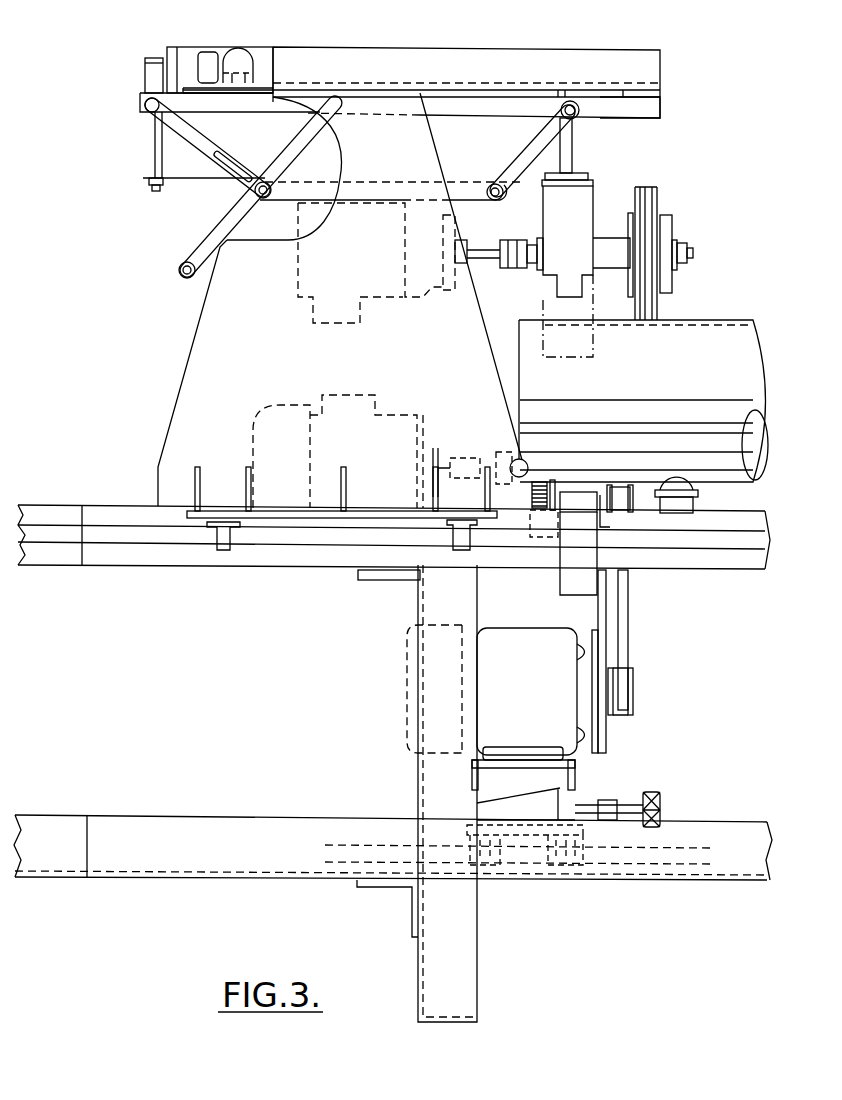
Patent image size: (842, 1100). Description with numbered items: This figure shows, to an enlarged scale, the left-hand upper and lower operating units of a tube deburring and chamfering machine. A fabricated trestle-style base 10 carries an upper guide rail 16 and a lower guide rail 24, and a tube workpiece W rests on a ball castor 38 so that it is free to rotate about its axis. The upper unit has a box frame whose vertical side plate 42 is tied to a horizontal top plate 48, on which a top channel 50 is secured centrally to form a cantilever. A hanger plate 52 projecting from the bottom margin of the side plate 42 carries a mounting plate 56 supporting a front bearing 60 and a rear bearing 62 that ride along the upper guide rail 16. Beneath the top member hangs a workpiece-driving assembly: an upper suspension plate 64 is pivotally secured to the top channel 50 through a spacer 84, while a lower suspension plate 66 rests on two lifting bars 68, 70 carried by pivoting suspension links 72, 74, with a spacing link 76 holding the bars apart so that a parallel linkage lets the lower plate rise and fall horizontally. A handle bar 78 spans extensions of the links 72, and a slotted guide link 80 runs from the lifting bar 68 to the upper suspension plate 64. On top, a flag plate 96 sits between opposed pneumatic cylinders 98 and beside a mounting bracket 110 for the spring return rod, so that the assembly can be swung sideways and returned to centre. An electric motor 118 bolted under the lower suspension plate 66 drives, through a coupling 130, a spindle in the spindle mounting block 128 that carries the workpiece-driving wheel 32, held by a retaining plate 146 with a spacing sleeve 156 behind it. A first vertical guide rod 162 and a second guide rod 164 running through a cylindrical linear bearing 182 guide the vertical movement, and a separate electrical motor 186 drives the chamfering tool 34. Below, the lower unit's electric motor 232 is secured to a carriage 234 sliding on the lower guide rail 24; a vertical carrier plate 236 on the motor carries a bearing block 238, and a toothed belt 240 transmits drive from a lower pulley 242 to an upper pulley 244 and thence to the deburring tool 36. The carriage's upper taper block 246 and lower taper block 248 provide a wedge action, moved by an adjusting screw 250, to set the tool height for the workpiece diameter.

The trestle-style base 10 is at (460, 980).
The upper guide rail 16 is at (110, 537).
The lower guide rail 24 is at (660, 857).
The workpiece-driving wheel 32 is at (643, 187).
The chamfering tool 34 is at (513, 452).
The deburring tool 36 is at (540, 490).
The ball castor 38 is at (673, 482).
The side plate 42 is at (196, 402).
The top plate 48 is at (263, 88).
The top channel 50 is at (480, 67).
The hanger plate 52 is at (340, 480).
The mounting plate 56 is at (383, 519).
The front bearing 60 is at (210, 541).
The rear bearing 62 is at (475, 541).
The upper suspension plate 64 is at (617, 110).
The lower suspension plate 66 is at (187, 180).
The lifting bar 68 is at (263, 198).
The lifting bar 70 is at (490, 188).
The suspension link 72 is at (300, 147).
The suspension link 74 is at (547, 141).
The spacing link 76 is at (382, 187).
The handle bar 78 is at (185, 280).
The slotted guide link 80 is at (177, 127).
The spacer 84 is at (653, 93).
The flag plate 96 is at (180, 63).
The pneumatic cylinder 98 is at (232, 52).
The mounting bracket 110 is at (205, 62).
The electric motor 118 is at (378, 280).
The spindle mounting block 128 is at (552, 222).
The coupling 130 is at (523, 262).
The retaining plate 146 is at (673, 230).
The spacing sleeve 156 is at (607, 243).
The first vertical guide rod 162 is at (573, 158).
The second guide rod 164 is at (155, 160).
The cylindrical linear bearing 182 is at (158, 78).
The electrical motor 186 is at (393, 425).
The electric motor 232 is at (548, 694).
The carriage 234 is at (573, 770).
The vertical carrier plate 236 is at (602, 740).
The bearing block 238 is at (575, 500).
The toothed belt 240 is at (620, 610).
The lower pulley 242 is at (633, 697).
The upper pulley 244 is at (633, 490).
The upper taper block 246 is at (487, 778).
The lower taper block 248 is at (500, 812).
The adjusting screw 250 is at (660, 800).
The workpiece W is at (732, 340).